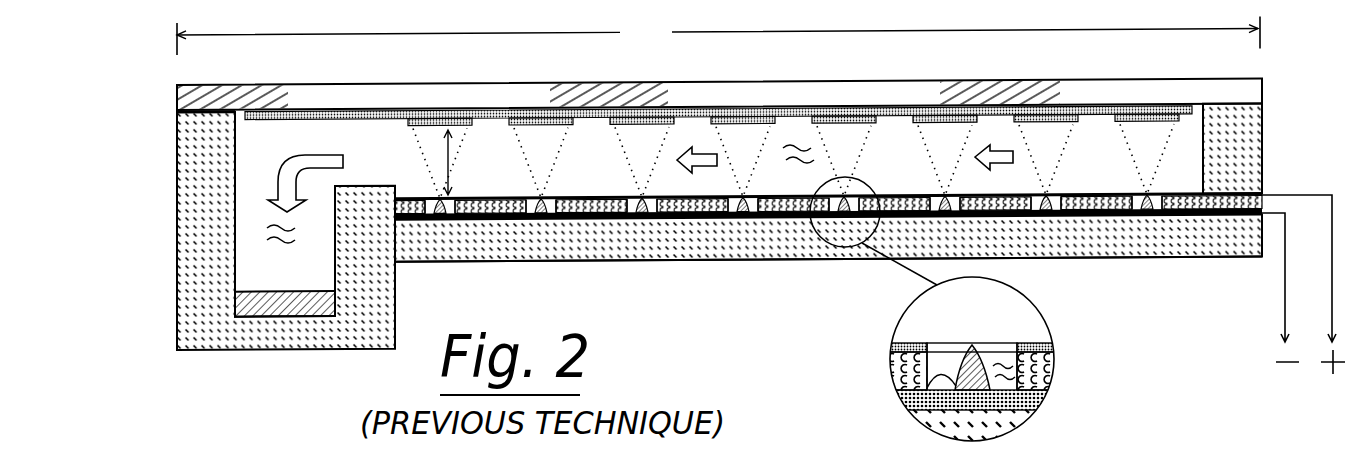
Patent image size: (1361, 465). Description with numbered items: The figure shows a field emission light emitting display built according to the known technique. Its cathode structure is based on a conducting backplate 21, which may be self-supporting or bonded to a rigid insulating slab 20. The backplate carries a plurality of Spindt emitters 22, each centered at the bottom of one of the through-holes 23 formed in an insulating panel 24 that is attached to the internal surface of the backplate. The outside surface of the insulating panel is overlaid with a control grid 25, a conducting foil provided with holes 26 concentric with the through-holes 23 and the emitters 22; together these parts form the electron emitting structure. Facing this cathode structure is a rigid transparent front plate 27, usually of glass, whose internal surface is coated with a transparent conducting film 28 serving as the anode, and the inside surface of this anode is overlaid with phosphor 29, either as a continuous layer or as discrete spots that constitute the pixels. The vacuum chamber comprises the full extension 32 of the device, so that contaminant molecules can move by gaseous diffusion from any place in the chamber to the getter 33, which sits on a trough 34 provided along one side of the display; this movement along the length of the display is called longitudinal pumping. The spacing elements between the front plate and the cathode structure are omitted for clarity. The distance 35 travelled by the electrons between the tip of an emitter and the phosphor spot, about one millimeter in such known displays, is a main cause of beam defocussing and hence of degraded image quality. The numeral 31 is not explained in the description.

The rigid insulating slab 20 is at (552, 248).
The conducting backplate 21 is at (695, 228).
The Spindt emitters 22 is at (1147, 197).
The through-holes 23 is at (921, 170).
The insulating panel 24 is at (482, 200).
The control grid 25 is at (905, 343).
The holes 26 is at (947, 350).
The front plate 27 is at (551, 100).
The transparent conducting film 28 is at (846, 110).
The phosphor 29 is at (618, 132).
The heat 31 is at (782, 140).
The full extension 32 is at (718, 35).
The getter 33 is at (288, 293).
The trough 34 is at (257, 233).
The distance 35 is at (440, 160).